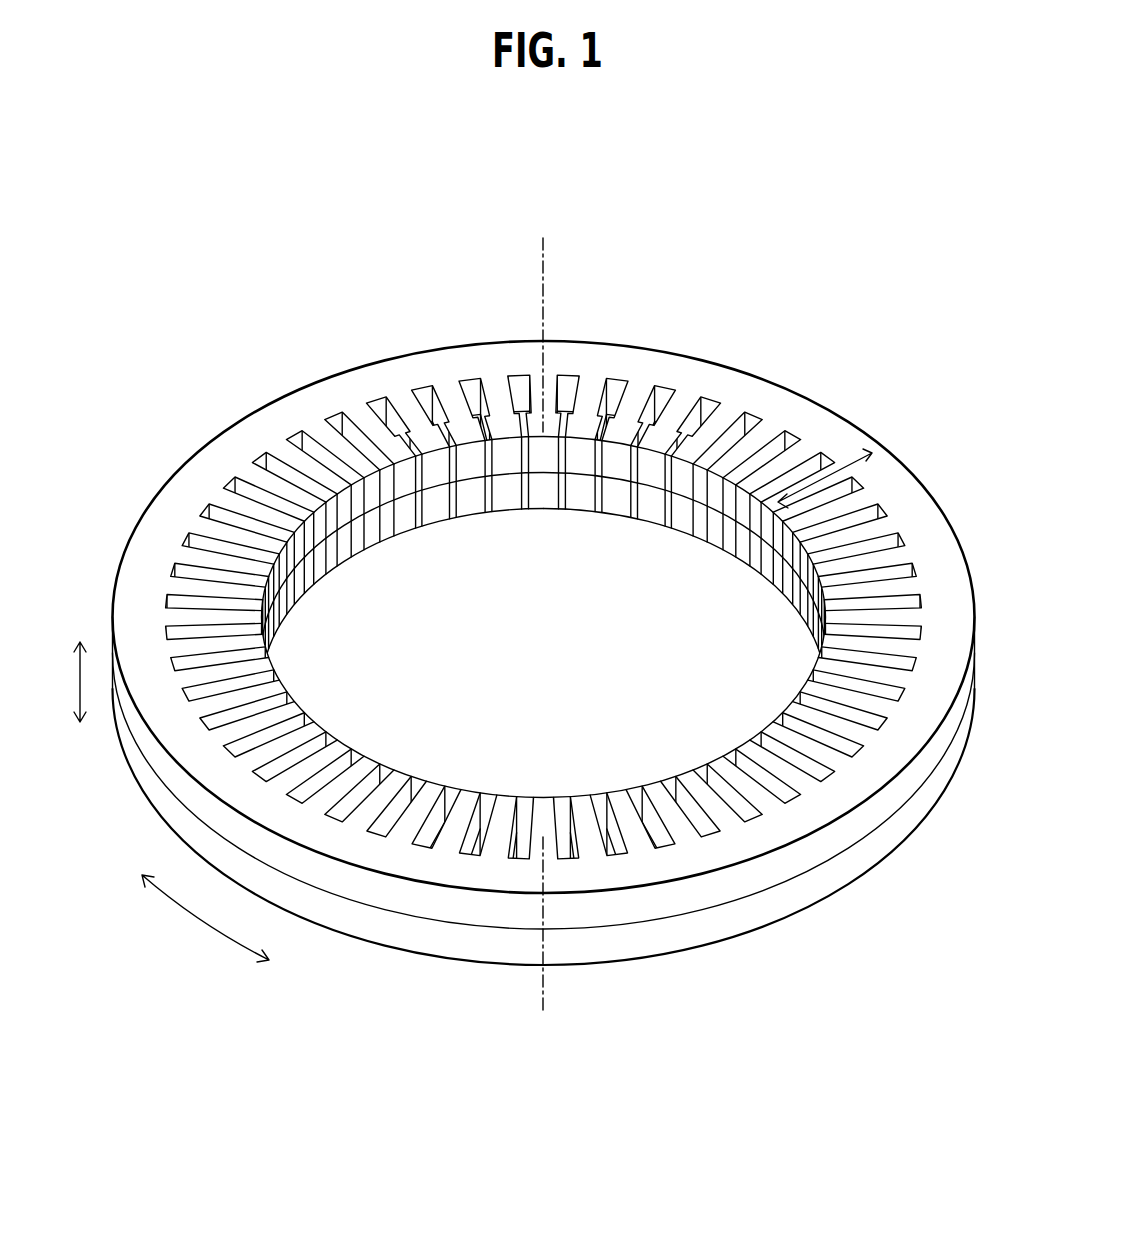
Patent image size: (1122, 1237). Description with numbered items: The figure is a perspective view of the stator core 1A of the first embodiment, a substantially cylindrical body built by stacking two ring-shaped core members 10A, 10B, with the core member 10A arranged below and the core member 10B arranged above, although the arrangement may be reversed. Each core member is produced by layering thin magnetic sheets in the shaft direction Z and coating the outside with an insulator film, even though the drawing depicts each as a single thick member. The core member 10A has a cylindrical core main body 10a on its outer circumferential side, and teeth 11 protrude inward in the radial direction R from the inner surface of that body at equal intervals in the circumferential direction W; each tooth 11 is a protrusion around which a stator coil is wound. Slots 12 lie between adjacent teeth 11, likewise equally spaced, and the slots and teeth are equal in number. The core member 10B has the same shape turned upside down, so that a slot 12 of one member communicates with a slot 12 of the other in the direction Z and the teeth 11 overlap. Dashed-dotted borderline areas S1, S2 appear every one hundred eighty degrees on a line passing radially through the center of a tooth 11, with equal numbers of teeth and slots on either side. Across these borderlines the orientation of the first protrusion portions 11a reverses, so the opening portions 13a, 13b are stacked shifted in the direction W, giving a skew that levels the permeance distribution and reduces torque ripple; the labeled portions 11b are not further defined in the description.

The stator core 1A is at (846, 320).
The core member 10A is at (857, 862).
The core member 10B is at (862, 822).
The core main body 10a is at (923, 512).
The tooth 11 is at (588, 395).
The first protrusion portion 11a is at (535, 425).
The slot opening 11b is at (347, 462).
The slot 12 is at (520, 393).
The opening portion 13a is at (458, 490).
The opening portion 13b is at (652, 468).
The borderline area S1 is at (542, 319).
The borderline area S2 is at (542, 940).
The radial direction R is at (845, 462).
The shaft direction Z is at (80, 659).
The circumferential direction W is at (222, 931).